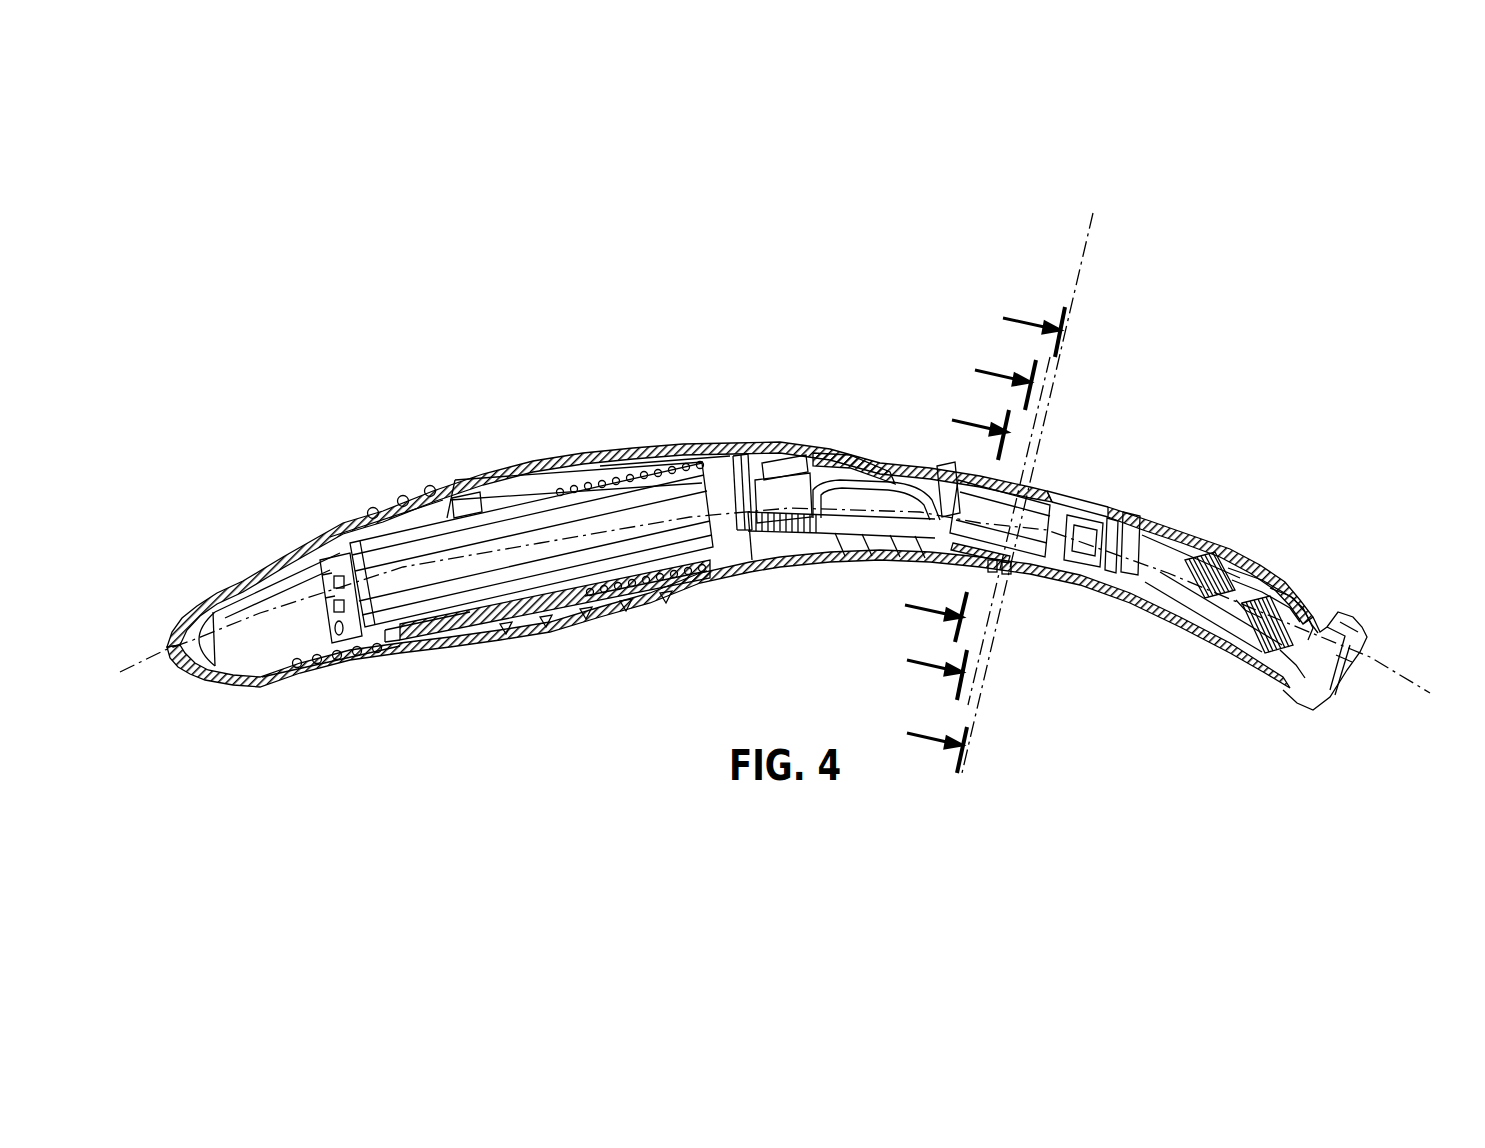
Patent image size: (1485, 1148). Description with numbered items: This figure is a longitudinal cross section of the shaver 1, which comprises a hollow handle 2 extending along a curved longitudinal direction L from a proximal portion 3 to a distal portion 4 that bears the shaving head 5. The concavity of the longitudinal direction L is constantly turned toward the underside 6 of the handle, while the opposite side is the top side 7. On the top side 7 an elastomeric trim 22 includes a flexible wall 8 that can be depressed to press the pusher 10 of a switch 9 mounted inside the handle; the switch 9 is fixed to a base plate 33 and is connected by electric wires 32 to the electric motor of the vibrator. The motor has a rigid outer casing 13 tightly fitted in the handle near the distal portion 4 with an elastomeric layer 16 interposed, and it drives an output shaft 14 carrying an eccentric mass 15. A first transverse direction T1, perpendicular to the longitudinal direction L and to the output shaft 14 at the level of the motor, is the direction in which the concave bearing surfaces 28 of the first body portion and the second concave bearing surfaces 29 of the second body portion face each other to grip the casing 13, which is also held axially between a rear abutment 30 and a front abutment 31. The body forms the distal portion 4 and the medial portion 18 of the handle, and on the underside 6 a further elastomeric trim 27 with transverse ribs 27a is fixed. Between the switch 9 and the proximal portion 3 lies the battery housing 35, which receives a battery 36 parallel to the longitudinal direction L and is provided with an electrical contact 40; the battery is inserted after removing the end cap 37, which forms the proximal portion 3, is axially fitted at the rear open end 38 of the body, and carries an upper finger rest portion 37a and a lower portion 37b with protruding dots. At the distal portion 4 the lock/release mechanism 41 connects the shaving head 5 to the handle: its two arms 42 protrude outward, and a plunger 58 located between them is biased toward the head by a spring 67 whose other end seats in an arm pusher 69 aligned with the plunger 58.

The shaver 1 is at (1193, 445).
The hollow handle 2 is at (688, 418).
The proximal portion 3 is at (185, 684).
The distal portion 4 is at (1246, 675).
The shaving head 5 is at (1386, 631).
The underside 6 is at (795, 588).
The top side 7 is at (598, 452).
The flexible wall 8 is at (832, 452).
The switch 9 is at (795, 482).
The pusher 10 is at (778, 468).
The rigid outer casing 13 is at (1040, 565).
The output shaft 14 is at (1082, 567).
The eccentric mass 15 is at (1112, 597).
The elastomeric layer 16 is at (1058, 490).
The medial portion 18 is at (695, 623).
The elastomeric trim 22 is at (688, 448).
The further elastomeric trim 27 is at (845, 572).
The transverse ribs 27a is at (610, 622).
The concave bearing surfaces 28 is at (1015, 462).
The second concave bearing surfaces 29 is at (992, 574).
The rear abutment 30 is at (952, 470).
The front abutment 31 is at (1108, 508).
The electric wires 32 is at (885, 481).
The base plate 33 is at (763, 557).
The battery housing 35 is at (491, 471).
The battery 36 is at (511, 515).
The end cap 37 is at (283, 552).
The upper finger rest portion 37a is at (393, 510).
The lower grip ridges 37b is at (318, 668).
The rear open end 38 is at (395, 656).
The electrical contact 40 is at (737, 470).
The lock/release mechanism 41 is at (1212, 628).
The arms 42 is at (346, 677).
The plunger 58 is at (1302, 599).
The spring 67 is at (1255, 581).
The arm pusher 69 is at (1210, 548).
The longitudinal direction L is at (645, 612).
The first transverse direction T1 is at (1085, 256).